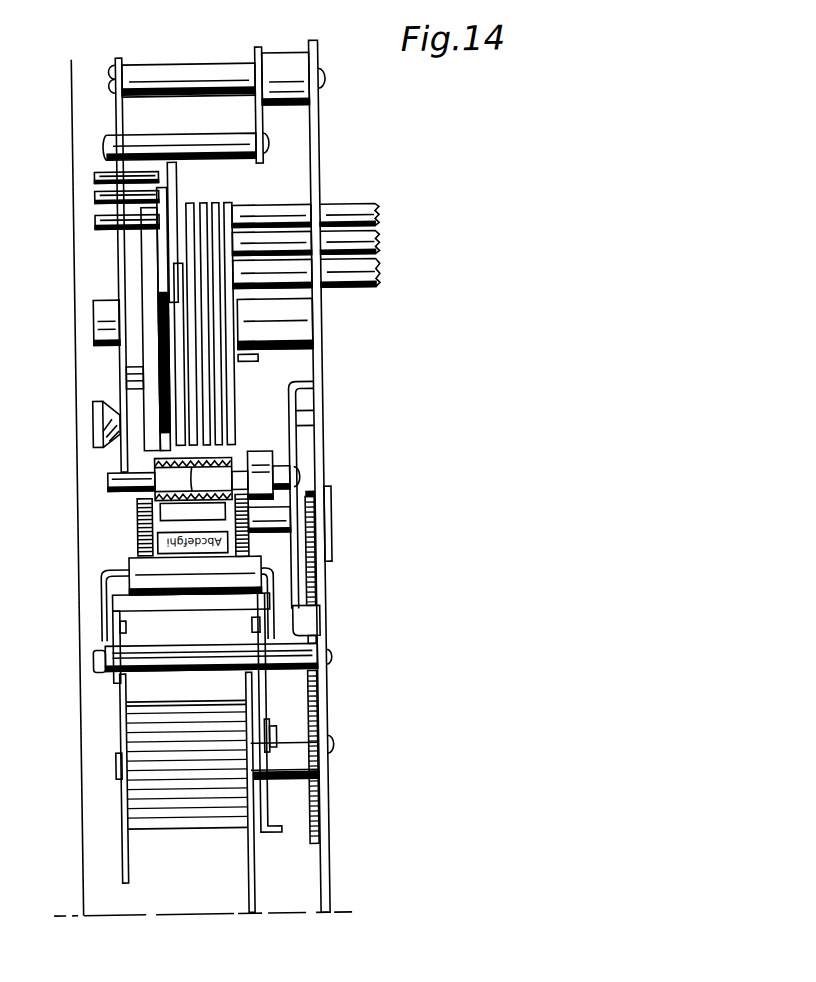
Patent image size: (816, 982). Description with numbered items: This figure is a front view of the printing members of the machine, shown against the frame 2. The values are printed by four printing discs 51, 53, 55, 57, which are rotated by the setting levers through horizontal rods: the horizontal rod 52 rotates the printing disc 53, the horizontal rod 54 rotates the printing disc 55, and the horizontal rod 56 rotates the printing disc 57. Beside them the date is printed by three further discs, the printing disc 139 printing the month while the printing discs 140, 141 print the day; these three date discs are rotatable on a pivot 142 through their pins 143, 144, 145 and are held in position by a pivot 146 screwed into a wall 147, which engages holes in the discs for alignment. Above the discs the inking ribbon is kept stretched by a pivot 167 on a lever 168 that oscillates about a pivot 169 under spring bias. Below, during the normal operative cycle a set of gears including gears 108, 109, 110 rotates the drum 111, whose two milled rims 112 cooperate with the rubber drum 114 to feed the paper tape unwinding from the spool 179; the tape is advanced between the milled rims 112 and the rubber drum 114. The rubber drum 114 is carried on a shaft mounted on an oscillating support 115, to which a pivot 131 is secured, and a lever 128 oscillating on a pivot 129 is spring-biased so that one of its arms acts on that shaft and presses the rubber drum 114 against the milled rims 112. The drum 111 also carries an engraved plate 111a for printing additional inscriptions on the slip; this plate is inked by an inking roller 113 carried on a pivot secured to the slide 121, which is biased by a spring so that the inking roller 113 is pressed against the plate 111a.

The frame 2 is at (324, 705).
The printing disc 51 is at (194, 203).
The printing disc 53 is at (210, 203).
The printing disc 55 is at (222, 203).
The printing disc 57 is at (234, 203).
The horizontal rod 52 is at (373, 275).
The horizontal rod 54 is at (382, 245).
The horizontal rod 56 is at (344, 214).
The gear 108 is at (316, 748).
The gear 109 is at (314, 583).
The gear 110 is at (313, 498).
The drum 111 is at (192, 522).
The engraved plate 111a is at (160, 505).
The milled rim 112 is at (138, 540).
The inking roller 113 is at (220, 463).
The rubber drum 114 is at (134, 580).
The support 115 is at (106, 601).
The slide 121 is at (295, 427).
The lever 128 is at (264, 700).
The pivot 129 is at (313, 654).
The pivot 131 is at (254, 626).
The printing disc 139 is at (147, 241).
The printing disc 140 is at (165, 246).
The printing disc 141 is at (173, 261).
The pivot 142 is at (98, 317).
The pin 143 is at (100, 220).
The pin 144 is at (100, 198).
The pin 145 is at (100, 177).
The pivot 146 is at (95, 412).
The wall 147 is at (121, 381).
The pivot 167 is at (182, 143).
The lever 168 is at (267, 126).
The pivot 169 is at (194, 75).
The spool 179 is at (163, 808).